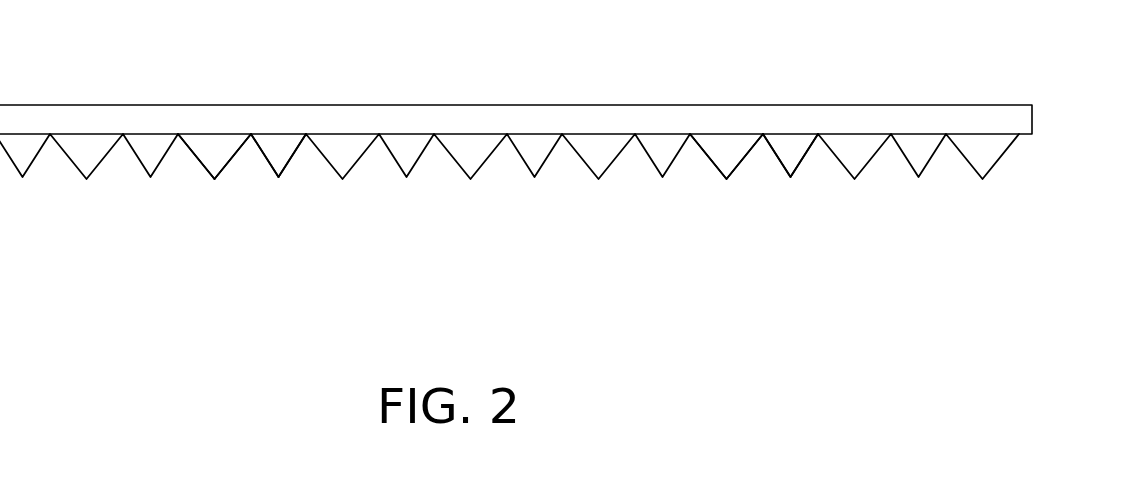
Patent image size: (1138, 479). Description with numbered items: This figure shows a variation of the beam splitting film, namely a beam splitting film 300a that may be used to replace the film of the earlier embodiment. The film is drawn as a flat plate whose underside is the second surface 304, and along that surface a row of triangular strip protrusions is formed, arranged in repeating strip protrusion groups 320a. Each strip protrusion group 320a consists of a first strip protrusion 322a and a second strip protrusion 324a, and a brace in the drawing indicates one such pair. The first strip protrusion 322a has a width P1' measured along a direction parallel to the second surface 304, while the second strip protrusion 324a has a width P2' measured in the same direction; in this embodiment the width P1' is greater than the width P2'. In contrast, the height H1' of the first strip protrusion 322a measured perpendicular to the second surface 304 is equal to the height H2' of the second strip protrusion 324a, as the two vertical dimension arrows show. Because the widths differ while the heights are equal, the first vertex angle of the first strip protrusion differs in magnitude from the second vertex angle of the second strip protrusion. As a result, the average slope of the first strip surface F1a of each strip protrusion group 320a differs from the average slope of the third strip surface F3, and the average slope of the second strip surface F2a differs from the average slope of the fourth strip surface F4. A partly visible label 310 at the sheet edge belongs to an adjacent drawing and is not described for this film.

The beam splitting film 300a is at (1027, 311).
The second surface 304 is at (992, 137).
The strip protrusion group 320a is at (837, 255).
The first strip protrusion 322a is at (719, 165).
The second strip protrusion 324a is at (798, 163).
The width of the first strip protrusion P1' is at (86, 68).
The width of the second strip protrusion P2' is at (149, 68).
The height of the first strip protrusion H1' is at (52, 183).
The height of the second strip protrusion H2' is at (121, 183).
The first strip surface F1a is at (194, 156).
The second strip surface F2a is at (224, 167).
The third strip surface F3 is at (262, 155).
The fourth strip surface F4 is at (291, 158).
The light guide plate (adjacent figure, cut off) 310 is at (1052, 471).